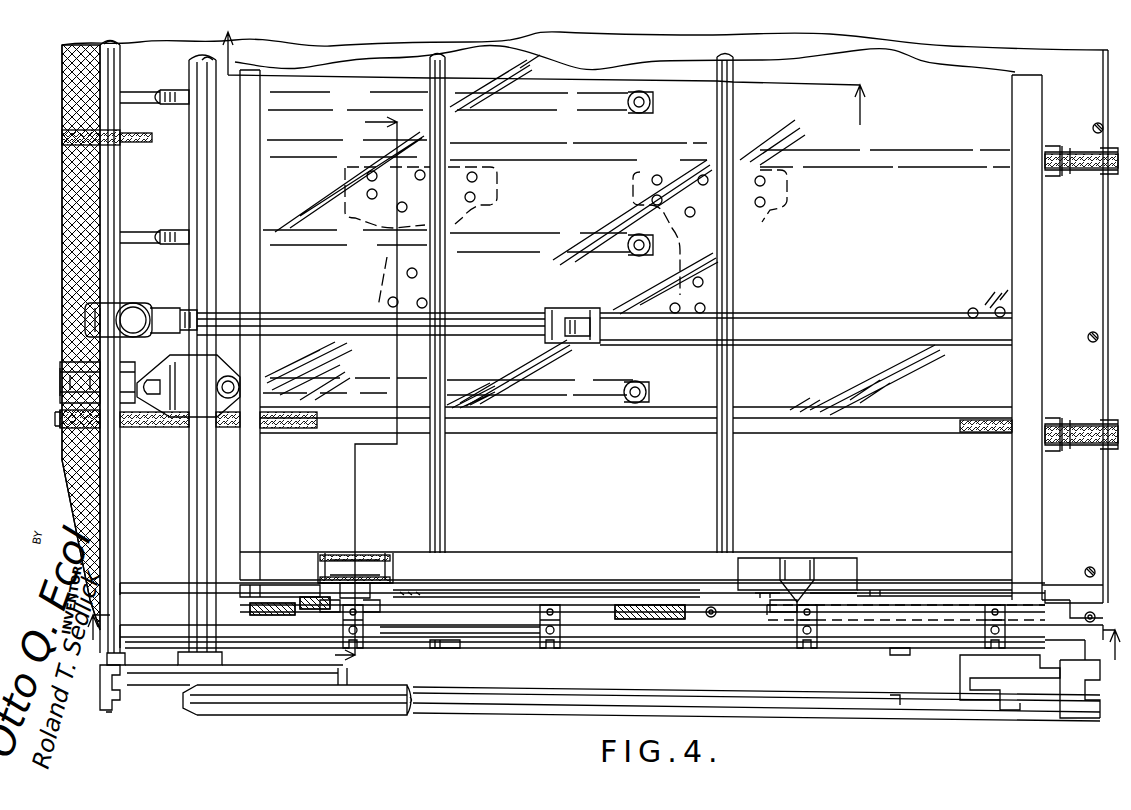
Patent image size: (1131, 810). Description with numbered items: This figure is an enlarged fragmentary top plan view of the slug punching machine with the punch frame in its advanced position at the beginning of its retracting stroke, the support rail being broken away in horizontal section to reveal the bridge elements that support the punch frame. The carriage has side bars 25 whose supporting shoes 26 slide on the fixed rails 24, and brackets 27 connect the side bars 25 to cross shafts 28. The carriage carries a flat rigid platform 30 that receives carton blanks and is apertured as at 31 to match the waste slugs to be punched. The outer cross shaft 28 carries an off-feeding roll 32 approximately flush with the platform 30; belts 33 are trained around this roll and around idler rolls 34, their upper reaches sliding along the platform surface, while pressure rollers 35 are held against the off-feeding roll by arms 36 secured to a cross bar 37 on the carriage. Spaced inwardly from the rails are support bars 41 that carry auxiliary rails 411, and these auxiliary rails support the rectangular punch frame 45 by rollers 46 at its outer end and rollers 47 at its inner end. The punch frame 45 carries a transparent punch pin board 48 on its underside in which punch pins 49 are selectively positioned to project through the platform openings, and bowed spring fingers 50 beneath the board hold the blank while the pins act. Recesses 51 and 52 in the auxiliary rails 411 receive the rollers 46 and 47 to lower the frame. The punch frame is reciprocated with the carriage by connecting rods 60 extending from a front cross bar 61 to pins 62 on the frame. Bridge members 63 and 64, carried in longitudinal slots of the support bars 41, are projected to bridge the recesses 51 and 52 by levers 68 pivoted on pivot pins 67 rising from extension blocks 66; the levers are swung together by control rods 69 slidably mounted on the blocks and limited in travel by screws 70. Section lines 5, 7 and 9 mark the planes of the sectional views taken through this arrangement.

The section line 5- 5 is at (605, 660).
The section line 7- 7 is at (354, 393).
The section line 9- 9 is at (537, 84).
The rails 24 is at (900, 722).
The side bars 25 is at (848, 700).
The supporting shoes 26 is at (1088, 725).
The brackets 27 is at (120, 672).
The cross shafts 28 is at (1085, 625).
The platform 30 is at (172, 497).
The apertures 31 is at (630, 186).
The off-feeding roll 32 is at (62, 335).
The belts 33 is at (58, 424).
The idler rolls 34 is at (1080, 148).
The pressure rollers 35 is at (62, 380).
The arms 36 is at (150, 415).
The cross bar 37 is at (190, 512).
The support bars 41 is at (645, 600).
The punch frame 45 is at (545, 565).
The rollers 46 is at (365, 590).
The rollers 47 is at (815, 590).
The punch pin board 48 is at (830, 420).
The punch pins 49 is at (367, 193).
The bowed spring fingers 50 is at (180, 104).
The recesses 51 is at (455, 580).
The recesses 52 is at (880, 592).
The connecting rods 60 is at (493, 320).
The front cross bar 61 is at (108, 248).
The pins 62 is at (585, 332).
The bridge member 63 is at (492, 600).
The bridge member 64 is at (920, 615).
The extension blocks 66 is at (330, 612).
The pivot pins 67 is at (345, 630).
The levers 68 is at (540, 640).
The control rods 69 is at (490, 638).
The screws 70 is at (440, 648).
The auxiliary rails 411 is at (262, 595).